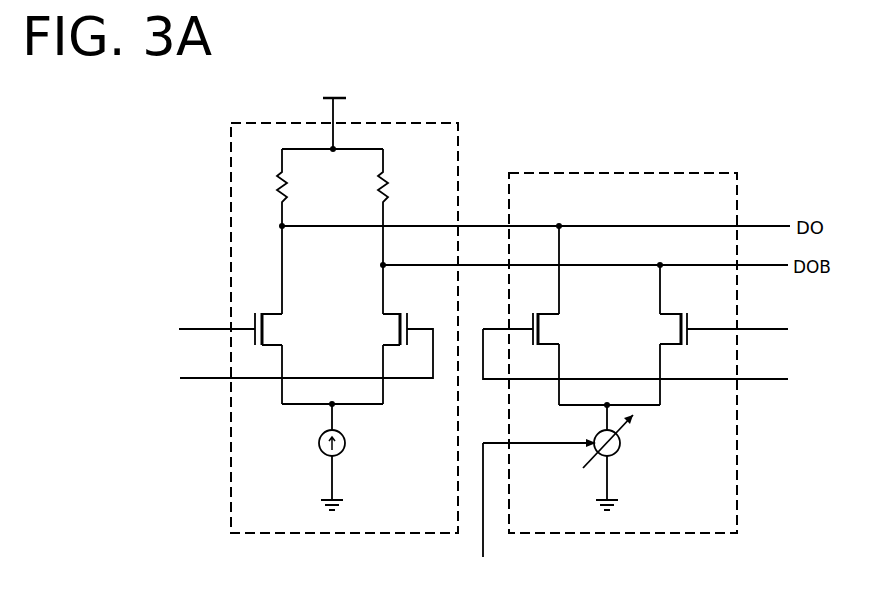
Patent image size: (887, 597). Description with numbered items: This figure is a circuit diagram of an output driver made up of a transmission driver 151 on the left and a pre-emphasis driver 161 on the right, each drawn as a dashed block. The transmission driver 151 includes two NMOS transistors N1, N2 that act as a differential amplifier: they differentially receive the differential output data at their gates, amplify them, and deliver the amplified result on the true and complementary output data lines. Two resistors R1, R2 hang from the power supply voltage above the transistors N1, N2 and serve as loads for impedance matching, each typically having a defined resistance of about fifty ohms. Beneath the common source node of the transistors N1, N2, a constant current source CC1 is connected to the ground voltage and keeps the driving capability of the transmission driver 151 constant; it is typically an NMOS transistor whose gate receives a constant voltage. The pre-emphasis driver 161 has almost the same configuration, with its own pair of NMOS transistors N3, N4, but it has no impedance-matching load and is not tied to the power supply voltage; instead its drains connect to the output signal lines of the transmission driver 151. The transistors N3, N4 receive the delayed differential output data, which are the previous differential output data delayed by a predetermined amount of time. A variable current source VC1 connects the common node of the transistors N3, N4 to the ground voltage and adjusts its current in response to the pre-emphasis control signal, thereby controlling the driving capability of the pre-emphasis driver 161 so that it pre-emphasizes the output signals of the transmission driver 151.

The transmission driver 151 is at (419, 124).
The pre-emphasis driver 161 is at (696, 175).
The resistor R1 is at (268, 187).
The resistor R2 is at (397, 207).
The NMOS transistor N1 is at (272, 315).
The NMOS transistor N2 is at (392, 334).
The NMOS transistor N3 is at (549, 315).
The NMOS transistor N4 is at (671, 335).
The constant current source CC1 is at (351, 452).
The variable current source VC1 is at (622, 452).